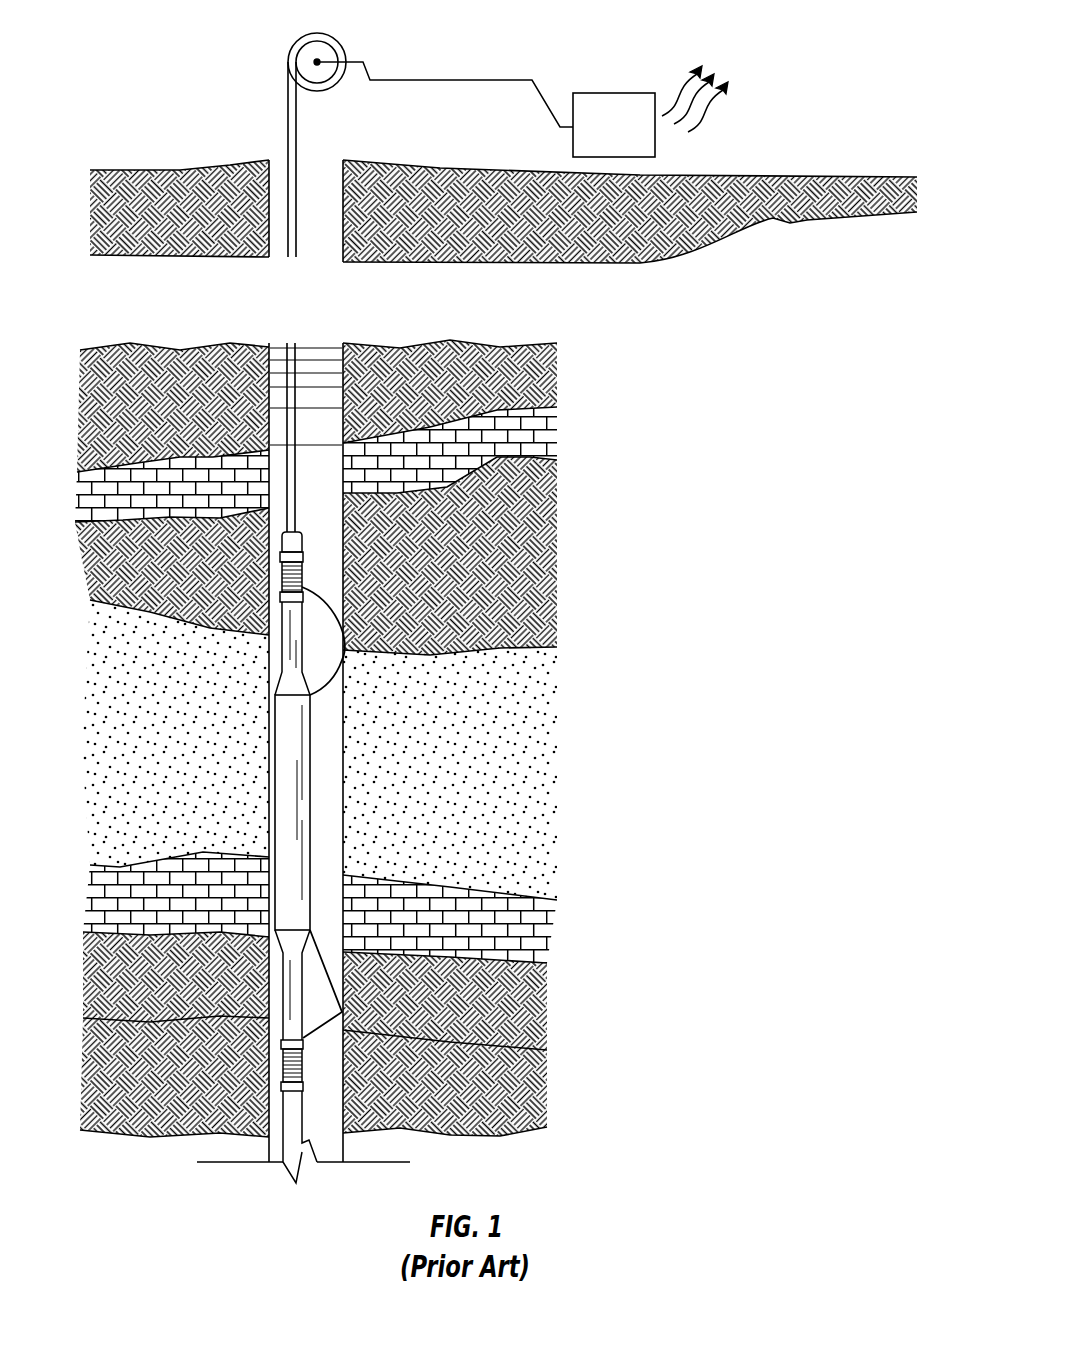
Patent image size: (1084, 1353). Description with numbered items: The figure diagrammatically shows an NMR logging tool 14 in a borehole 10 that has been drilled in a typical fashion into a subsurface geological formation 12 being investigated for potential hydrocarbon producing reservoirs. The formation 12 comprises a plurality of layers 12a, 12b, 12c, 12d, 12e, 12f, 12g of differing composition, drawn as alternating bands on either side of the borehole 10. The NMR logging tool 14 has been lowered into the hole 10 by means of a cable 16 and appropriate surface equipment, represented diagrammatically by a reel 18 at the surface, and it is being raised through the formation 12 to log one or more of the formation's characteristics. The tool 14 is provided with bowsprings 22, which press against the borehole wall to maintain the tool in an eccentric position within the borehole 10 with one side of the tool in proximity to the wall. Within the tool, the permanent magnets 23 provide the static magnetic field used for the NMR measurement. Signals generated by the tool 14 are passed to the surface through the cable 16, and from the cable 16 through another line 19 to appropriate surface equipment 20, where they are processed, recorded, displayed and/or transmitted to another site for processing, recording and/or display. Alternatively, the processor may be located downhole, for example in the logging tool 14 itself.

The borehole 10 is at (334, 246).
The subsurface geological formation 12 is at (673, 604).
The layer 12a is at (543, 380).
The layer 12b is at (537, 438).
The layer 12c is at (525, 557).
The layer 12d is at (517, 743).
The layer 12e is at (527, 933).
The layer 12f is at (533, 1007).
The layer 12g is at (533, 1095).
The NMR logging tool 14 is at (301, 857).
The cable 16 is at (288, 128).
The reel 18 is at (327, 30).
The line 19 is at (448, 80).
The surface equipment 20 is at (603, 93).
The bowsprings 22 is at (337, 675).
The permanent magnets 23 is at (310, 797).